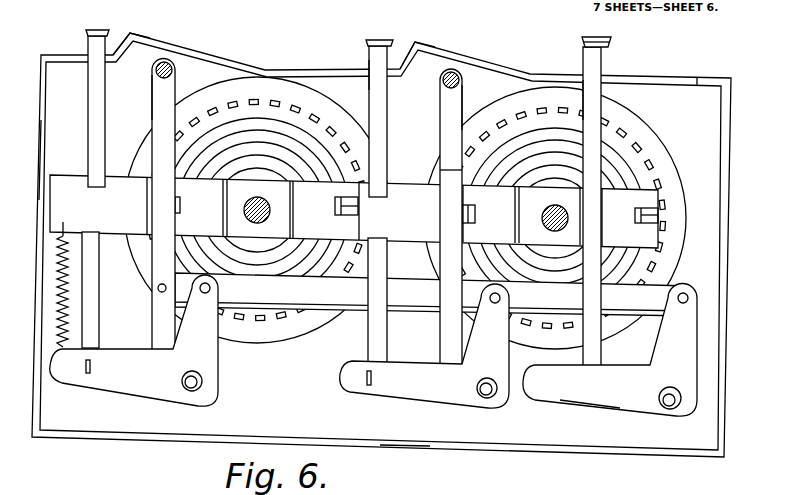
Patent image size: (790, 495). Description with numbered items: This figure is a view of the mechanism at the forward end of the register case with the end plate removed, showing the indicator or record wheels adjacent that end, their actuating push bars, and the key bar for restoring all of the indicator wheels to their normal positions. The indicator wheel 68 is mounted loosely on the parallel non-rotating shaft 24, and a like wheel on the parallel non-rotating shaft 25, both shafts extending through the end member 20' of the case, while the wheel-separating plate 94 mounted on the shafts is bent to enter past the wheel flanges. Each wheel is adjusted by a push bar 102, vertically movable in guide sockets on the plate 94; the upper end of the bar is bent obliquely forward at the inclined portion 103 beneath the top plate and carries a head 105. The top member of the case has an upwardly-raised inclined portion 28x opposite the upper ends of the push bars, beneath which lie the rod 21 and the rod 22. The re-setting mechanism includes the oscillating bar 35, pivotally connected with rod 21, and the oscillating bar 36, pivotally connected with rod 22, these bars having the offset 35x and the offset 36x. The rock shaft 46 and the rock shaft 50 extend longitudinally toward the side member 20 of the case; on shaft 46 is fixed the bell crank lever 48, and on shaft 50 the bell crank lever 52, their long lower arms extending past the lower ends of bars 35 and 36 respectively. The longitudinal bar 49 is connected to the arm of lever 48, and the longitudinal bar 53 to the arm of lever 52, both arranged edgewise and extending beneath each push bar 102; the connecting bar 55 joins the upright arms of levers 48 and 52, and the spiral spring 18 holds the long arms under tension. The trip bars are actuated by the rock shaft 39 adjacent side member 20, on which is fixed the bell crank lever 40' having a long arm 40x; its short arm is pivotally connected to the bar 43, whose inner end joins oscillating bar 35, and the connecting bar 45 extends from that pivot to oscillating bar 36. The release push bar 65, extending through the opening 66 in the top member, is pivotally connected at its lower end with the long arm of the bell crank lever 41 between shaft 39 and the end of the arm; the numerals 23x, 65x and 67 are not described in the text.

The spiral spring 18 is at (58, 318).
The side member of the case 20 is at (394, 245).
The end member of the case 20' is at (20, 160).
The rod 21 is at (454, 72).
The rod 22 is at (168, 62).
The cam rise 23x is at (130, 37).
The non-rotating shaft 24 is at (553, 229).
The non-rotating shaft 25 is at (270, 212).
The upwardly-raised inclined portion 28x is at (417, 42).
The oscillating bar 35 is at (453, 105).
The offset of oscillating bar 35x is at (462, 78).
The oscillating bar 36 is at (161, 100).
The offset of oscillating bar 36x is at (175, 70).
The rock shaft 39 is at (677, 406).
The bell crank lever 40' is at (642, 350).
The long arm of bell crank lever 40x is at (585, 400).
The bell crank lever 41 is at (669, 411).
The bar 43 is at (673, 291).
The connecting bar 45 is at (363, 311).
The rock shaft 46 is at (488, 400).
The bell crank lever 48 is at (463, 406).
The longitudinal bar 49 is at (368, 386).
The rock shaft 50 is at (187, 392).
The bell crank lever 52 is at (201, 396).
The longitudinal bar 53 is at (89, 374).
The connecting bar 55 is at (346, 302).
The release push bar 65 is at (605, 78).
The slide rod end 65x is at (591, 387).
The opening in top member 66 is at (583, 78).
The rod head 67 is at (605, 39).
The indicator wheel 68 is at (647, 143).
The wheel-separating plate 94 is at (497, 174).
The push bar 102 is at (100, 108).
The inclined portion of push bar 103 is at (370, 75).
The head of push bar 105 is at (99, 31).